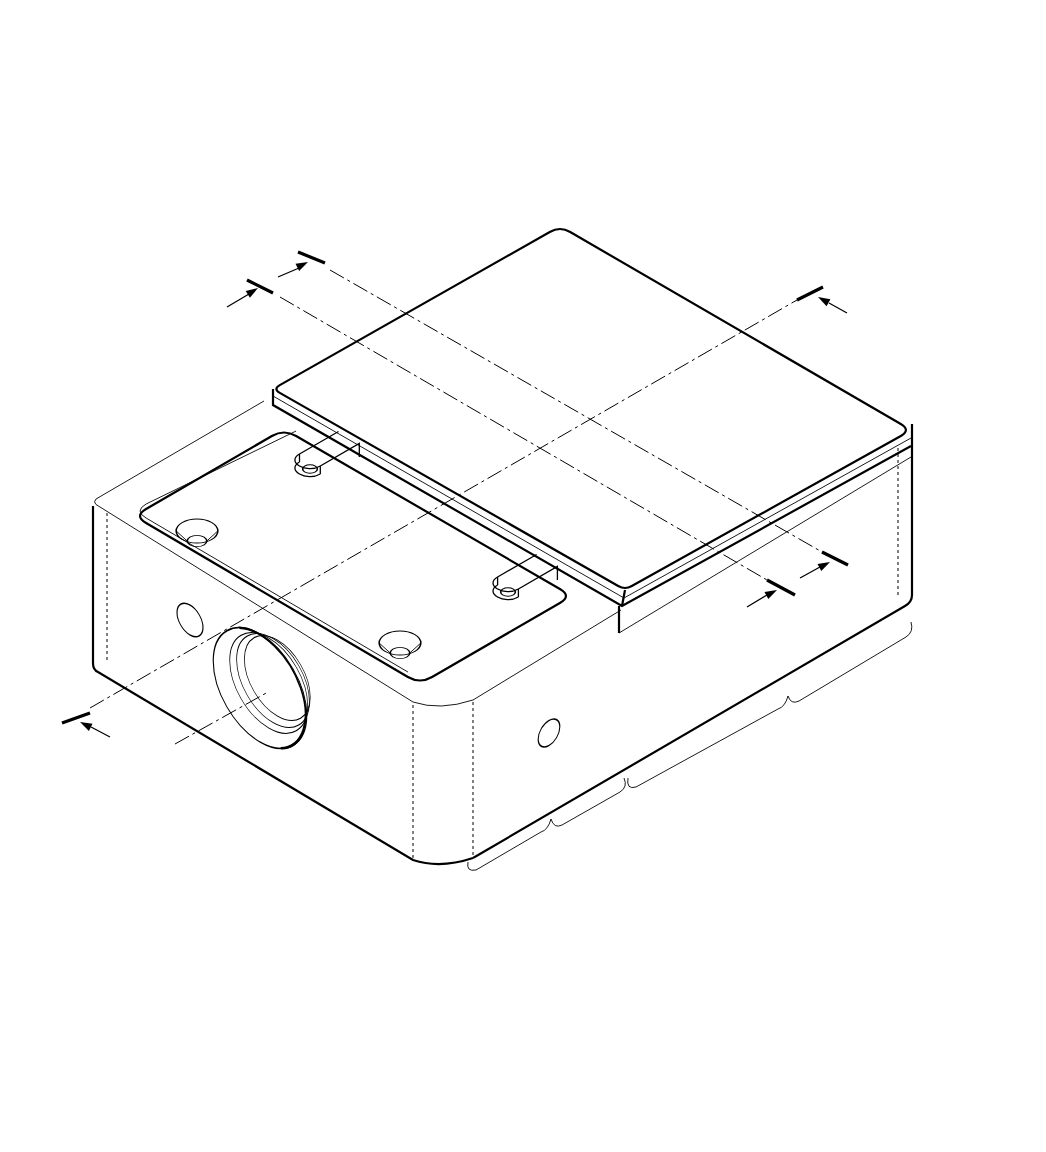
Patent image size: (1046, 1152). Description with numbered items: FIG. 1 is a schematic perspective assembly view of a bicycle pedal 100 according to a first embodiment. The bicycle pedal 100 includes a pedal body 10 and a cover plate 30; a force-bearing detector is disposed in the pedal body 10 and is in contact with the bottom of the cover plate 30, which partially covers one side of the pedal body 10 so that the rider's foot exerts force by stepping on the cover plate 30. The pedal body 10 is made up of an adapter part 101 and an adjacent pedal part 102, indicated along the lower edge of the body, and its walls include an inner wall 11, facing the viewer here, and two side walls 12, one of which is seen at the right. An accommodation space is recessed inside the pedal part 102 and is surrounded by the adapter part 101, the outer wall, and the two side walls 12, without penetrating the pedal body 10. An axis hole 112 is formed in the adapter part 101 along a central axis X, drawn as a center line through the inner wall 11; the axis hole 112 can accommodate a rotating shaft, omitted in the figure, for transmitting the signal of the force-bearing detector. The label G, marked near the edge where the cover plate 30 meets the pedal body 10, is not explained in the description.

The bicycle pedal 100 is at (790, 82).
The pedal body 10 is at (908, 572).
The inner wall 11 is at (352, 790).
The side wall 12 is at (882, 537).
The adapter part 101 is at (547, 831).
The pedal part 102 is at (770, 705).
The axis hole 112 is at (257, 736).
The cover plate 30 is at (642, 260).
The gap G is at (916, 453).
The central axis X is at (180, 743).